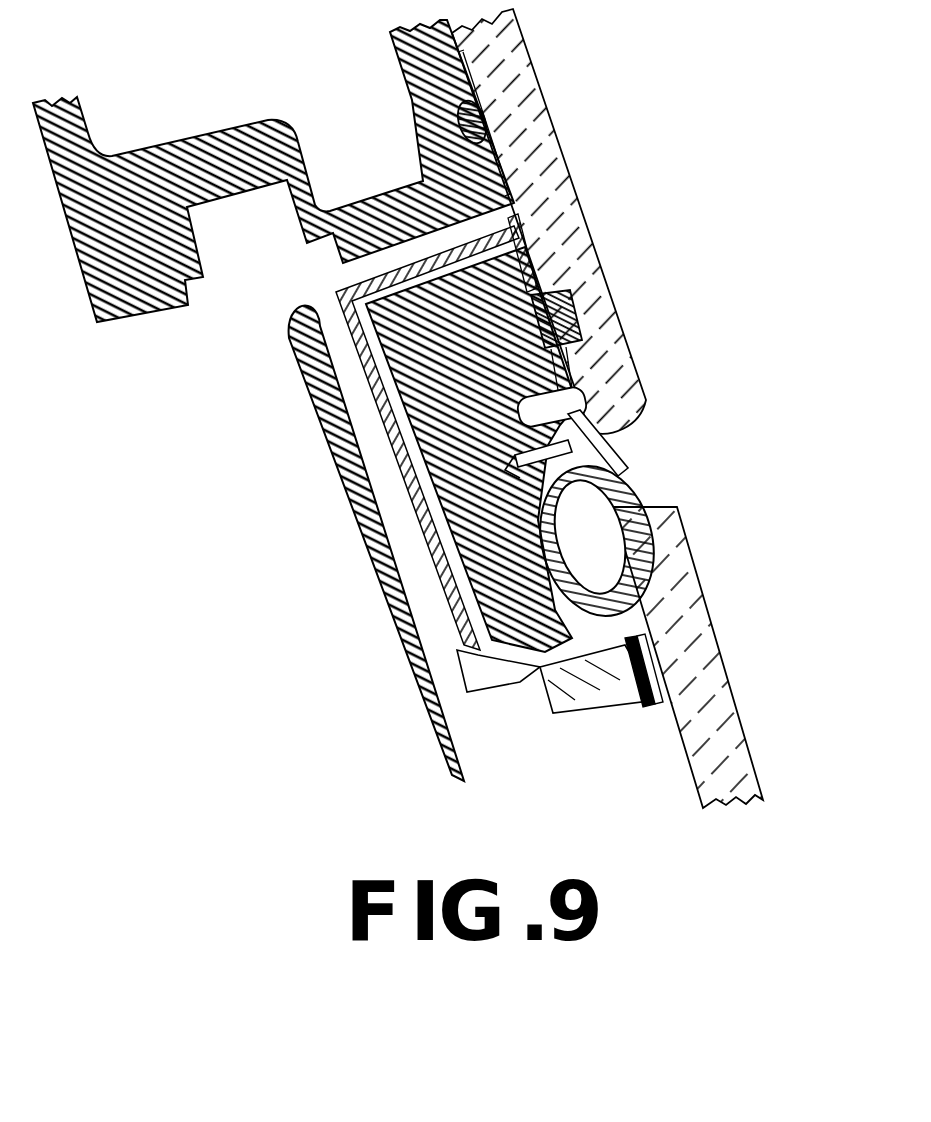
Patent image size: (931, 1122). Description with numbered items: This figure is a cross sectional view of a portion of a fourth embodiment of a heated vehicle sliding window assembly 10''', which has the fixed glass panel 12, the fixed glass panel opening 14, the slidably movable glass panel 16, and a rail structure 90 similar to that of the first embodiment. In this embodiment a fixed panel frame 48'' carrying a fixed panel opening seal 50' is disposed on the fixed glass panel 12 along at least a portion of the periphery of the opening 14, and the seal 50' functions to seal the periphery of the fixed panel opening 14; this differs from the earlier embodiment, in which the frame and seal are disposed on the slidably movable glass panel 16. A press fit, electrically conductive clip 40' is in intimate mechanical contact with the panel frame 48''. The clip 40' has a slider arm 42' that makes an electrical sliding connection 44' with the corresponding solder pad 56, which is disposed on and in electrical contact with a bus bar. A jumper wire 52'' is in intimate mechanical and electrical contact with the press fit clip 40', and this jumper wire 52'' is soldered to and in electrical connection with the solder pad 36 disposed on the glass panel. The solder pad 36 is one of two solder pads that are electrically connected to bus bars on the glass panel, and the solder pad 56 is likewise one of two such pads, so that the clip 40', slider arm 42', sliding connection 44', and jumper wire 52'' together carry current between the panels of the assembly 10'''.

The heated vehicle sliding window assembly 10''' is at (664, 408).
The fixed glass panel 12 is at (607, 312).
The fixed glass panel opening 14 is at (717, 472).
The slidably movable glass panel 16 is at (742, 738).
The solder pad 36 is at (533, 238).
The press fit clip 40' is at (632, 618).
The slider arm 42' is at (576, 704).
The electrical sliding connection 44' is at (643, 704).
The fixed panel frame 48'' is at (395, 449).
The fixed panel opening seal 50' is at (626, 515).
The jumper wire 52'' is at (364, 543).
The solder pad 56 is at (647, 666).
The rail structure 90 is at (293, 73).